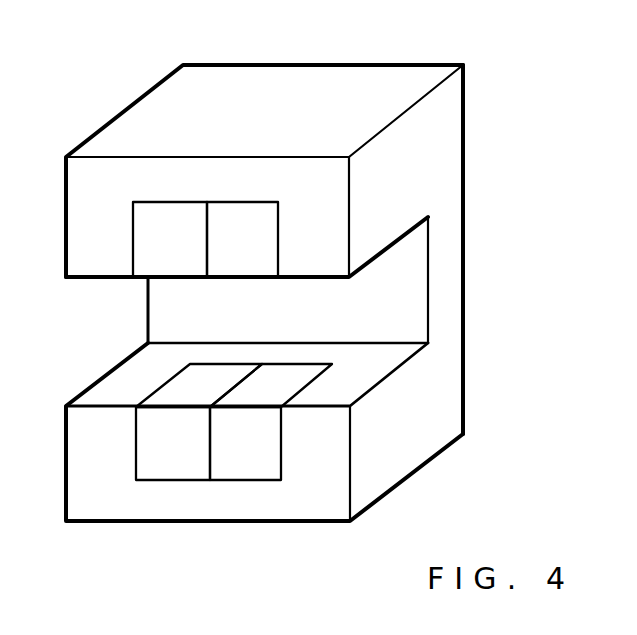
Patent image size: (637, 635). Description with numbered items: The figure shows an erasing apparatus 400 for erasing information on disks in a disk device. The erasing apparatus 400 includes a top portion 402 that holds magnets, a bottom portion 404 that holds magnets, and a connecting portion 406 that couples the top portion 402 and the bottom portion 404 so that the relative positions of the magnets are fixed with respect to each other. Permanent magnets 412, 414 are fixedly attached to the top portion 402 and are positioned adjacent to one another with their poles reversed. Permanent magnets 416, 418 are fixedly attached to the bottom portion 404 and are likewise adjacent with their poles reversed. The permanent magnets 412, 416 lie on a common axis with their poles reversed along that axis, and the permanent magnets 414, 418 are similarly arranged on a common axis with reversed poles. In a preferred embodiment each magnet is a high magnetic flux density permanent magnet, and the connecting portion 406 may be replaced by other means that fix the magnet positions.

The erasing apparatus 400 is at (72, 74).
The top portion 402 is at (295, 82).
The bottom portion 404 is at (202, 507).
The connecting portion 406 is at (456, 248).
The permanent magnet 412 is at (147, 245).
The permanent magnet 414 is at (268, 237).
The permanent magnet 416 is at (147, 442).
The permanent magnet 418 is at (268, 447).